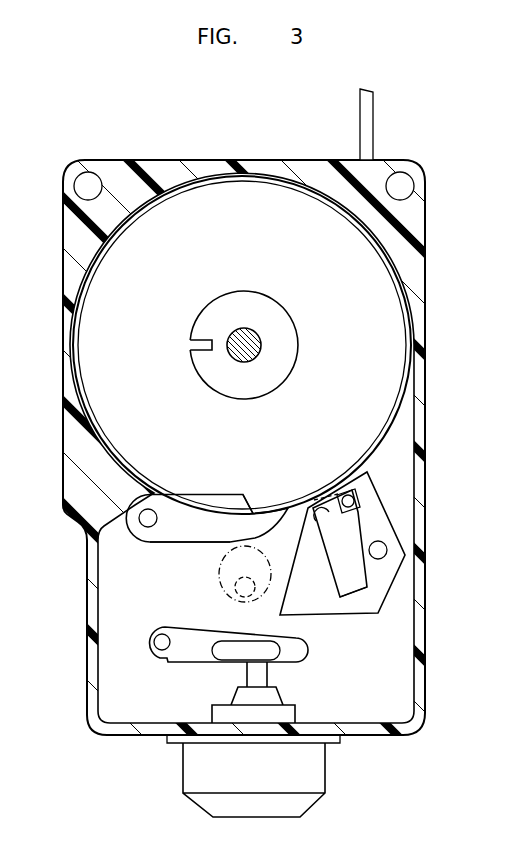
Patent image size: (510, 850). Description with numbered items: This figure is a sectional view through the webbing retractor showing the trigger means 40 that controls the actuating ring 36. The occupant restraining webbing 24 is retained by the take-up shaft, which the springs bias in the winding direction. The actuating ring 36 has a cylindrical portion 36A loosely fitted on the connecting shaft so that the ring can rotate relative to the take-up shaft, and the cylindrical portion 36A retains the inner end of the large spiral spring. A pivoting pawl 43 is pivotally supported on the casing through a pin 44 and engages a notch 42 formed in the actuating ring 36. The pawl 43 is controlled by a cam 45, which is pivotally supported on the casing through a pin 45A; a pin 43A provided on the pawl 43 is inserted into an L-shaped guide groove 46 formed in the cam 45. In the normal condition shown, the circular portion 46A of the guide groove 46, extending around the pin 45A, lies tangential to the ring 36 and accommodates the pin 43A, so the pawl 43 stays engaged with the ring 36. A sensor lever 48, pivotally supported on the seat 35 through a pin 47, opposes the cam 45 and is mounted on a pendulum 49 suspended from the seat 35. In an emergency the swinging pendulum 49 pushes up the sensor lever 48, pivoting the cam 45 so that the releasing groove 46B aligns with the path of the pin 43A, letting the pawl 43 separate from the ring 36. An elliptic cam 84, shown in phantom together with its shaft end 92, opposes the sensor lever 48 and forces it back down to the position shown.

The occupant restraining webbing 24 is at (371, 117).
The seat 35 is at (117, 612).
The actuating ring 36 is at (411, 337).
The cylindrical portion 36A is at (210, 339).
The trigger means 40 is at (278, 493).
The notch 42 is at (250, 500).
The pivoting pawl 43 is at (189, 540).
The pin 43A is at (360, 499).
The pin 44 is at (146, 528).
The cam 45 is at (383, 600).
The pin 45A is at (388, 549).
The L-shaped guide groove 46 is at (344, 559).
The circular portion 46A is at (322, 506).
The releasing groove 46B is at (357, 588).
The pin 47 is at (157, 650).
The sensor lever 48 is at (187, 640).
The pendulum 49 is at (237, 694).
The elliptic cam 84 is at (218, 578).
The pin outline 92 is at (258, 598).